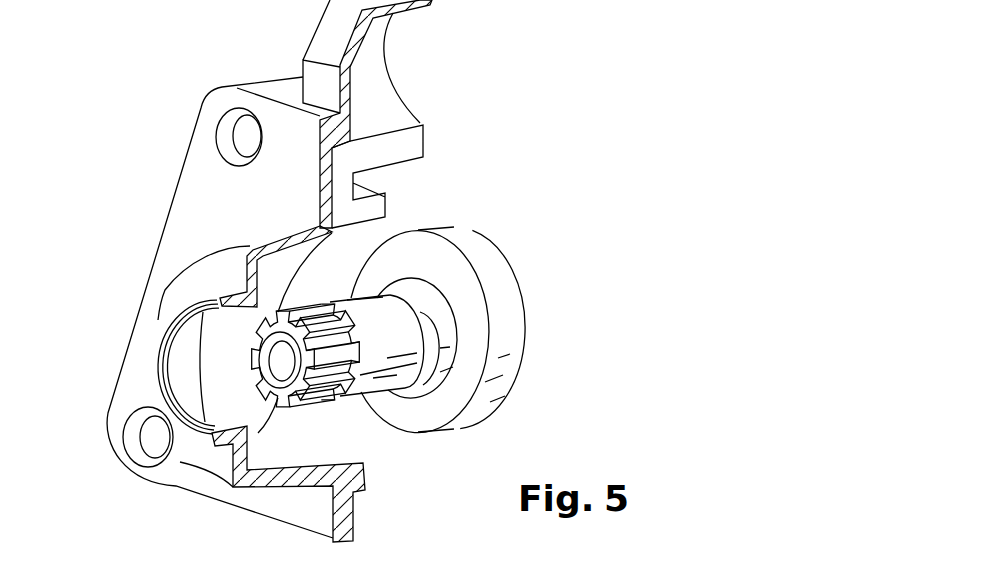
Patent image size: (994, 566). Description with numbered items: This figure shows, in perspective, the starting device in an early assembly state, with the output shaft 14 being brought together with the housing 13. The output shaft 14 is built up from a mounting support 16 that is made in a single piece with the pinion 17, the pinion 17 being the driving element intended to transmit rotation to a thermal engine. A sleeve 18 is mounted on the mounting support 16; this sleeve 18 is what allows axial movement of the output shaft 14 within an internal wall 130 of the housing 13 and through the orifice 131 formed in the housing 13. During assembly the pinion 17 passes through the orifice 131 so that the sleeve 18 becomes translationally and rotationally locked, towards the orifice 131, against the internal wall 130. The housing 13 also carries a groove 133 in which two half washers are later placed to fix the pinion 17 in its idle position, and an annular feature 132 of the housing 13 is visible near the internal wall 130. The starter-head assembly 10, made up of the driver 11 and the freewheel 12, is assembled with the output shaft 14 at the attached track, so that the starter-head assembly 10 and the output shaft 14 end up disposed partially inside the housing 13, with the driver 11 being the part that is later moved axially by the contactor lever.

The starter-head assembly 10 is at (524, 408).
The driver 11 is at (477, 257).
The freewheel 12 is at (478, 348).
The housing 13 is at (208, 192).
The internal wall 130 is at (192, 392).
The orifice 131 is at (184, 353).
The ring 132 is at (145, 346).
The groove 133 is at (227, 443).
The output shaft 14 is at (551, 259).
The mounting support 16 is at (400, 328).
The pinion 17 is at (341, 383).
The sleeve 18 is at (455, 358).